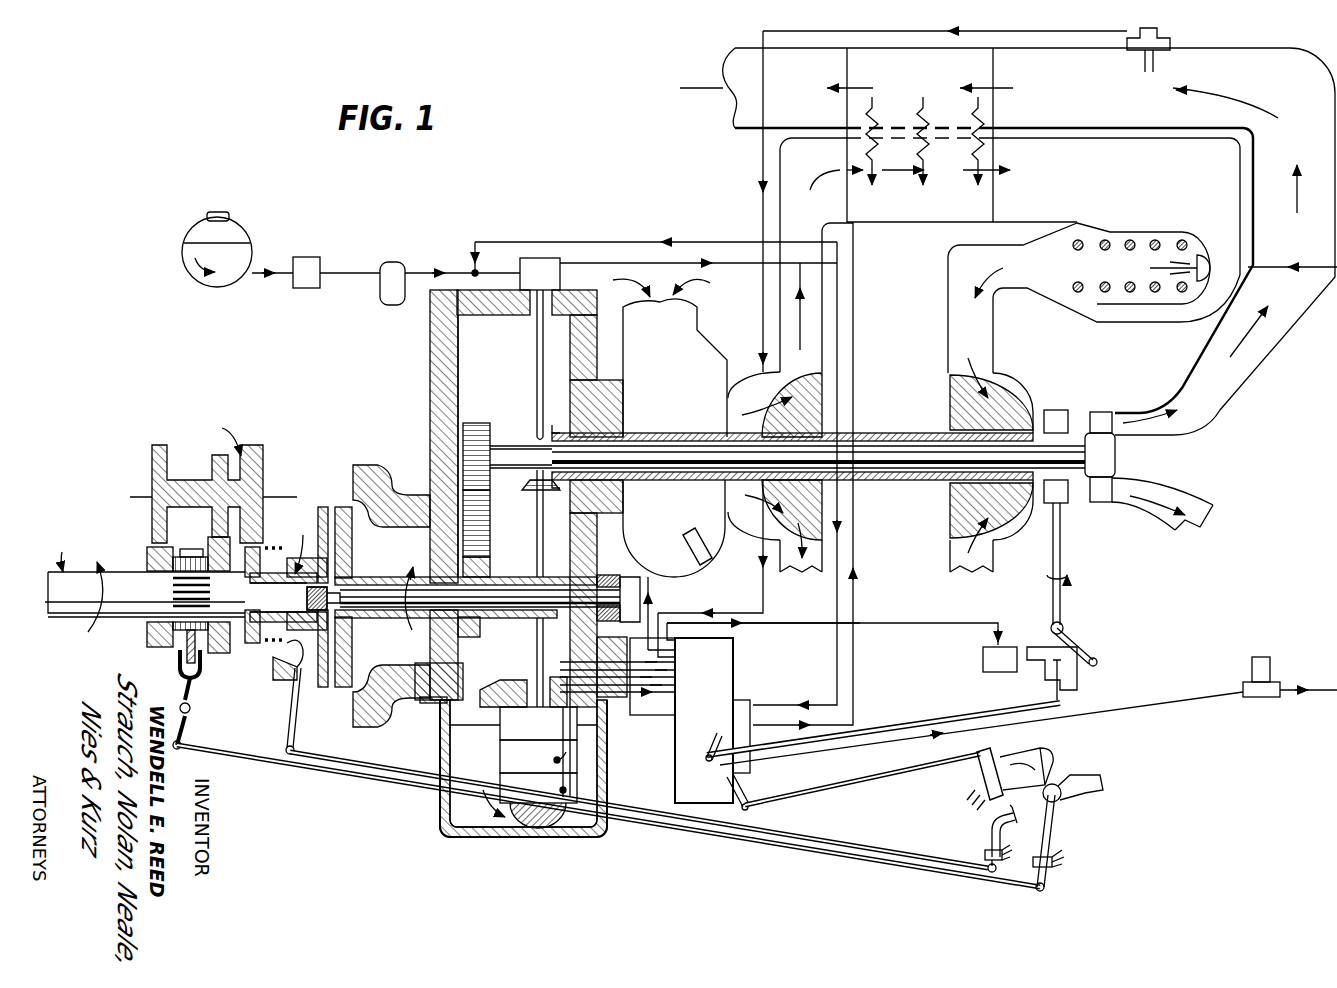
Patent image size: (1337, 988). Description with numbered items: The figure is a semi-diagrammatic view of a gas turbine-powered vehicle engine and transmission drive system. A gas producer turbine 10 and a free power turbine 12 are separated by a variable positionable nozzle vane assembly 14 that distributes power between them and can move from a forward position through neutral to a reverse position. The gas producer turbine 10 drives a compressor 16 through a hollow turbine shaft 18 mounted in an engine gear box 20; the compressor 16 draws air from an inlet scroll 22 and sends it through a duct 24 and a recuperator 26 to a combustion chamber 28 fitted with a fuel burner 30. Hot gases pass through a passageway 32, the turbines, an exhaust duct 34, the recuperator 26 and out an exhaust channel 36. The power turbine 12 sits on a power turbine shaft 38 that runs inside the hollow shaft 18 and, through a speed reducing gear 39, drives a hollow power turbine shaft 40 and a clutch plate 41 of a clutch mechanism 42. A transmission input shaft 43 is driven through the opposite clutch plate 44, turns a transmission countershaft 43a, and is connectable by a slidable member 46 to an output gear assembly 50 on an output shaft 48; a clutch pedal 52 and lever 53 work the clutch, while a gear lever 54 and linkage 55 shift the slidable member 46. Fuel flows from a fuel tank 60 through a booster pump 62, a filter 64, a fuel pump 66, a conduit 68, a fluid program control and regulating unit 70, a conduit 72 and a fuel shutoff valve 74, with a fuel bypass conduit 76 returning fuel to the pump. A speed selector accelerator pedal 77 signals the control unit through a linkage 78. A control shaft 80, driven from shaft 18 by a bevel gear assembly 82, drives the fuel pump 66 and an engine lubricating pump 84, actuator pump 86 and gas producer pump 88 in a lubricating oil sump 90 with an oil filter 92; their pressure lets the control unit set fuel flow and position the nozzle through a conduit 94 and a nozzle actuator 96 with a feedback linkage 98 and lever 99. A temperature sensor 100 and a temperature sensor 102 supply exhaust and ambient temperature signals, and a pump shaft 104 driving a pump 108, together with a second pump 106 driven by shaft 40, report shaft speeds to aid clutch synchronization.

The gas producer turbine 10 is at (1000, 400).
The free power turbine 12 is at (1105, 410).
The variable positionable nozzle vane assembly 14 is at (1056, 408).
The compressor 16 is at (786, 545).
The hollow turbine shaft 18 is at (885, 480).
The engine gear box 20 is at (430, 358).
The inlet scroll 22 is at (698, 332).
The duct 24 is at (822, 227).
The recuperator 26 is at (947, 226).
The combustion chamber 28 is at (1119, 279).
The fuel burner 30 is at (1200, 263).
The passageway 32 is at (948, 320).
The exhaust duct 34 is at (1328, 240).
The exhaust channel 36 is at (752, 122).
The power turbine shaft 38 is at (910, 447).
The speed reducing gear 39 is at (494, 512).
The hollow power turbine shaft 40 is at (492, 578).
The clutch plate 41 is at (353, 636).
The clutch mechanism 42 is at (333, 495).
The transmission input shaft 43 is at (253, 590).
The transmission countershaft 43a is at (262, 447).
The clutch plate 44 is at (325, 687).
The slidable member 46 is at (186, 650).
The output shaft 48 is at (72, 625).
The output gear assembly 50 is at (150, 646).
The clutch pedal 52 is at (988, 827).
The lever 53 is at (298, 740).
The gear lever 54 is at (1052, 826).
The linkage 55 is at (203, 680).
The fuel tank 60 is at (198, 228).
The booster pump 62 is at (314, 257).
The filter 64 is at (390, 262).
The fuel pump 66 is at (540, 258).
The conduit 68 is at (639, 272).
The fluid program control and regulating unit 70 is at (748, 662).
The conduit 72 is at (811, 758).
The fuel shutoff valve 74 is at (1260, 697).
The fuel bypass conduit 76 is at (857, 655).
The speed selector accelerator pedal 77 is at (976, 772).
The linkage 78 is at (838, 792).
The control shaft 80 is at (537, 362).
The bevel gear assembly 82 is at (543, 492).
The engine lubricating pump 84 is at (544, 735).
The actuator pump 86 is at (544, 768).
The gas producer pump 88 is at (544, 800).
The lubricating oil sump 90 is at (484, 781).
The oil filter 92 is at (556, 825).
The conduit 94 is at (930, 623).
The nozzle actuator 96 is at (983, 660).
The feedback linkage 98 is at (933, 708).
The lever 99 is at (717, 730).
The temperature sensor 100 is at (1170, 45).
The temperature sensor 102 is at (708, 568).
The pump shaft 104 is at (520, 600).
The second pump 106 is at (610, 577).
The pump 108 is at (625, 592).